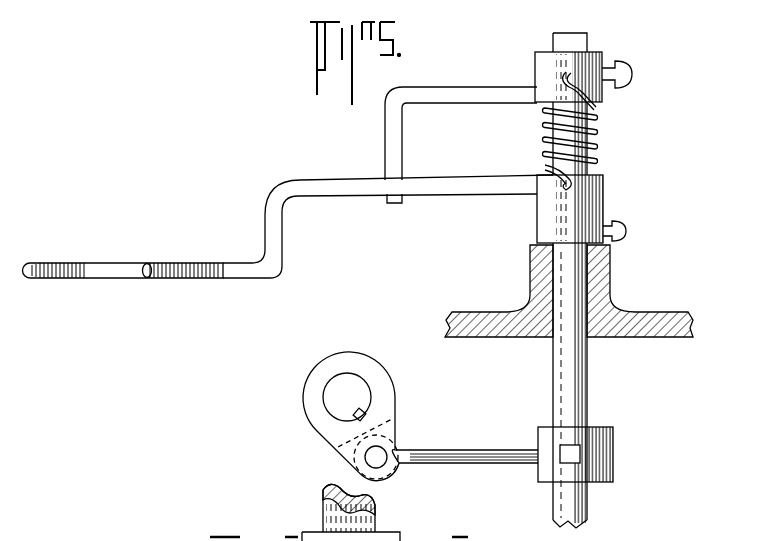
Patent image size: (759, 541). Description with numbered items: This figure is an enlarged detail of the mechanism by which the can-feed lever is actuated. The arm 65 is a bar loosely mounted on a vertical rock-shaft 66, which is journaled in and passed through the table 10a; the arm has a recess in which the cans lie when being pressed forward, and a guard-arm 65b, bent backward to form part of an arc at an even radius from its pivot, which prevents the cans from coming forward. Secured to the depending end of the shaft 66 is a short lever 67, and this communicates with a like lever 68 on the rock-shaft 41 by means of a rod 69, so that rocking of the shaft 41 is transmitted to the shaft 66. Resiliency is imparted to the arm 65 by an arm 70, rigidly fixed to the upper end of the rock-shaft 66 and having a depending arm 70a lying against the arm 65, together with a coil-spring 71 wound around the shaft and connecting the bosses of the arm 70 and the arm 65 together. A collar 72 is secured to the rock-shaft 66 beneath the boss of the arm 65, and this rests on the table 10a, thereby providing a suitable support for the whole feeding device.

The table portion 10a is at (658, 311).
The rock-shaft 41 is at (351, 457).
The arm 65 is at (345, 172).
The guard-arm 65b is at (90, 258).
The vertical rock-shaft 66 is at (570, 385).
The short lever 67 is at (596, 428).
The lever 68 is at (386, 413).
The rod 69 is at (478, 447).
The arm 70 is at (545, 70).
The depending arm 70a is at (396, 157).
The coil-spring 71 is at (590, 151).
The collar 72 is at (550, 232).